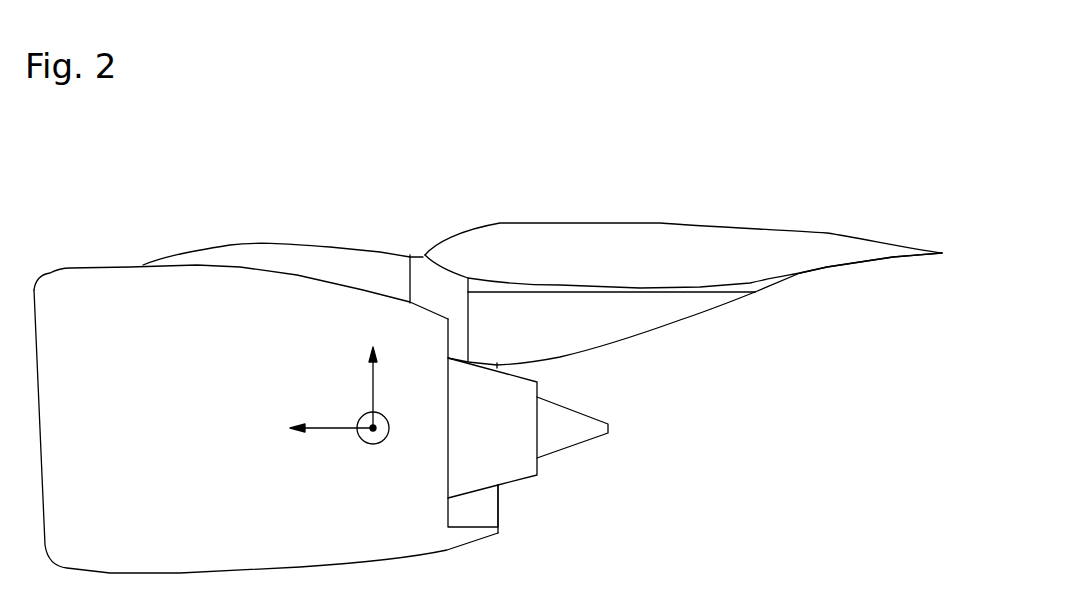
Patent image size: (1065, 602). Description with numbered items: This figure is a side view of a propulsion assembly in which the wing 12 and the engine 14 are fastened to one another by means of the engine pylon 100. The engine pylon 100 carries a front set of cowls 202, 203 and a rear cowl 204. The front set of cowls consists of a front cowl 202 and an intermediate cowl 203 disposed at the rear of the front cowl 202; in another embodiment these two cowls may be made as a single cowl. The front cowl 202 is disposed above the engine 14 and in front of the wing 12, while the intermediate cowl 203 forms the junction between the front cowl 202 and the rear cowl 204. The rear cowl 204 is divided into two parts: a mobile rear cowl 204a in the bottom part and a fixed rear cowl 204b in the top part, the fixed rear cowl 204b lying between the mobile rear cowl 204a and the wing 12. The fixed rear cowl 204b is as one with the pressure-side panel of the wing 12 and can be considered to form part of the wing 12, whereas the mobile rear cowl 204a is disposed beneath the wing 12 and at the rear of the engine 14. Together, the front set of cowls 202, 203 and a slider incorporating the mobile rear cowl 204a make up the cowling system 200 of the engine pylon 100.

The wing 12 is at (708, 242).
The engine 14 is at (167, 527).
The engine pylon 100 is at (488, 362).
The cowling system 200 is at (398, 362).
The front cowl 202 is at (227, 255).
The intermediate cowl 203 is at (422, 283).
The rear cowl 204 is at (695, 334).
The mobile rear cowl 204a is at (613, 337).
The fixed rear cowl 204b is at (758, 290).